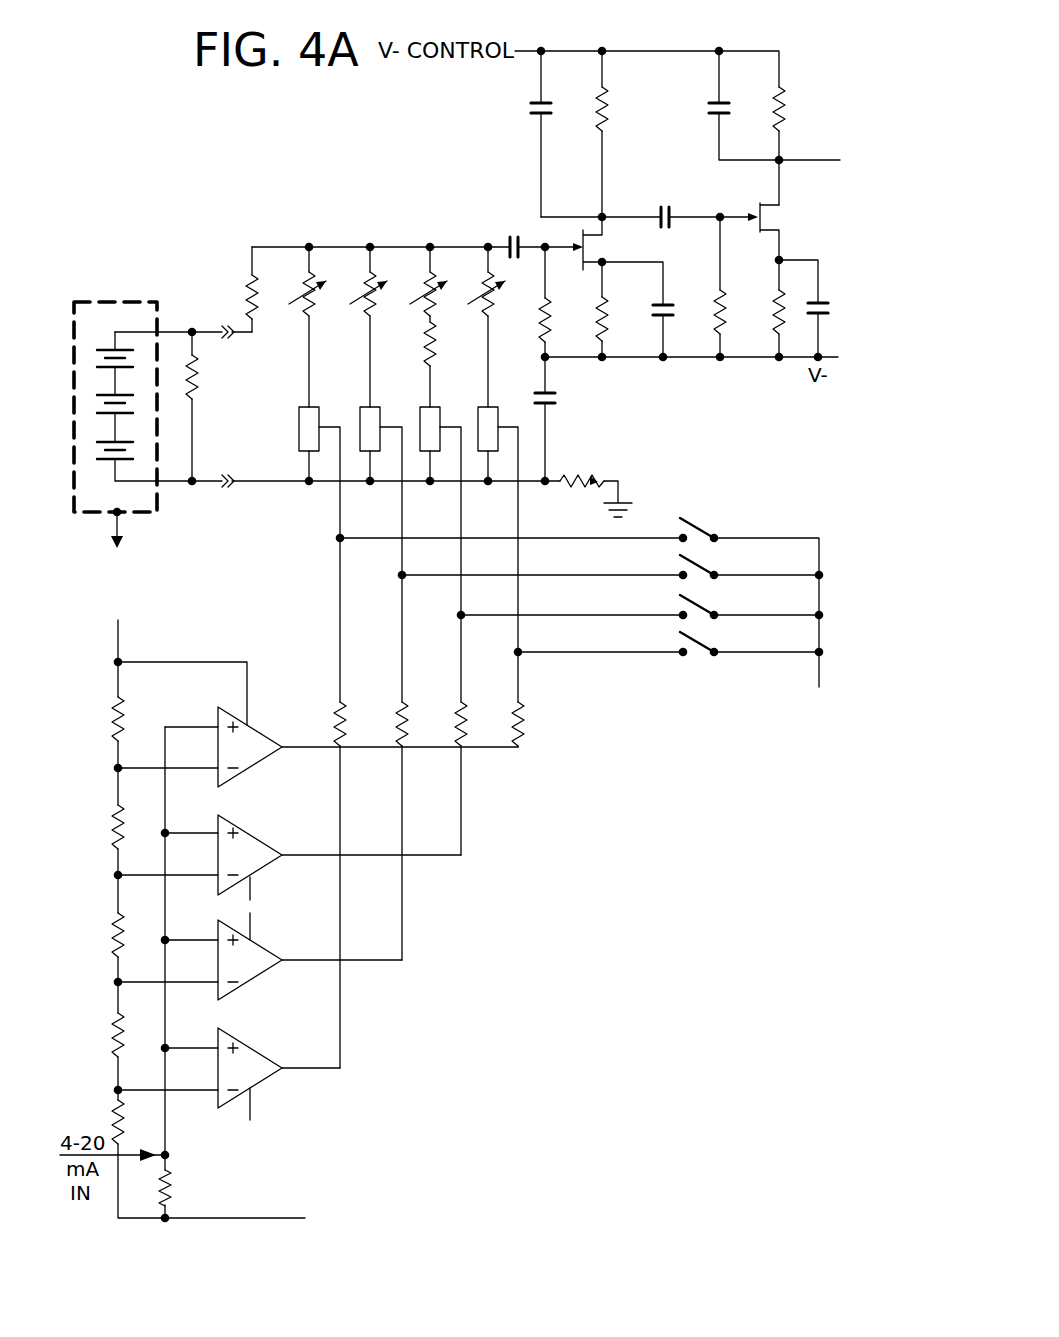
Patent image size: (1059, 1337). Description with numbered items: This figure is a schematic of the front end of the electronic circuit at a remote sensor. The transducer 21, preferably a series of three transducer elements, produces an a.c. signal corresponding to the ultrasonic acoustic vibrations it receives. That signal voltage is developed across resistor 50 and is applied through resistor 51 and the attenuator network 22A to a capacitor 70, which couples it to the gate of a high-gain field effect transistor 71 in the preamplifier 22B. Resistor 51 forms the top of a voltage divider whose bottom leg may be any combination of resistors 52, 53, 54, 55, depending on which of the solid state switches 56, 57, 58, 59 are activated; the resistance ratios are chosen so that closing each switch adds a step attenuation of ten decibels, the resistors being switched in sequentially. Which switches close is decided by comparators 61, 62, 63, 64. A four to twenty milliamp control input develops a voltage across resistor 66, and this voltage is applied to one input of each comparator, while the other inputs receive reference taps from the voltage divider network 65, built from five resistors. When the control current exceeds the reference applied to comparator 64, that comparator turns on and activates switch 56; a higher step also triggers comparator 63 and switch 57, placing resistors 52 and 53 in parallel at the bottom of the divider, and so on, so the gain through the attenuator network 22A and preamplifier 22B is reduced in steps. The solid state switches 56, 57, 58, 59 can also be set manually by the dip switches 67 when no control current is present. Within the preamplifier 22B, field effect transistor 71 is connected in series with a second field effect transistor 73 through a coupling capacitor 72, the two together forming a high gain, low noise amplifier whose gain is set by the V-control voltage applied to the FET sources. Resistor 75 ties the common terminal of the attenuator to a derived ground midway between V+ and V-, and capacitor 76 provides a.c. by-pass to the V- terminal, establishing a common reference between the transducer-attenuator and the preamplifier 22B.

The transducer 21 is at (110, 302).
The attenuator network 22A is at (296, 232).
The preamplifier 22B is at (724, 364).
The resistor 50 is at (197, 379).
The resistor 51 is at (246, 288).
The resistor 52 is at (298, 314).
The resistor 53 is at (358, 314).
The resistor 54 is at (418, 317).
The resistor 55 is at (478, 317).
The solid state switch 56 is at (299, 432).
The solid state switch 57 is at (368, 414).
The solid state switch 58 is at (426, 414).
The solid state switch 59 is at (484, 416).
The comparator 61 is at (264, 766).
The comparator 62 is at (262, 834).
The comparator 63 is at (263, 984).
The comparator 64 is at (260, 1056).
The voltage divider network 65 is at (116, 869).
The resistor 66 is at (172, 1194).
The dip switches 67 is at (705, 665).
The capacitor 70 is at (503, 231).
The field effect transistor 71 is at (592, 247).
The coupling capacitor 72 is at (666, 215).
The second field effect transistor 73 is at (788, 213).
The resistor 75 is at (588, 472).
The capacitor 76 is at (550, 402).